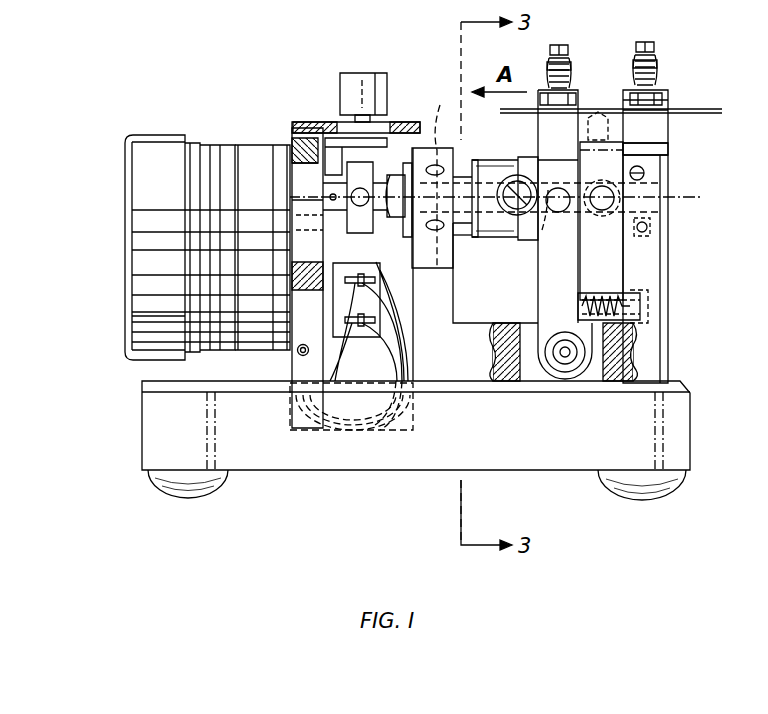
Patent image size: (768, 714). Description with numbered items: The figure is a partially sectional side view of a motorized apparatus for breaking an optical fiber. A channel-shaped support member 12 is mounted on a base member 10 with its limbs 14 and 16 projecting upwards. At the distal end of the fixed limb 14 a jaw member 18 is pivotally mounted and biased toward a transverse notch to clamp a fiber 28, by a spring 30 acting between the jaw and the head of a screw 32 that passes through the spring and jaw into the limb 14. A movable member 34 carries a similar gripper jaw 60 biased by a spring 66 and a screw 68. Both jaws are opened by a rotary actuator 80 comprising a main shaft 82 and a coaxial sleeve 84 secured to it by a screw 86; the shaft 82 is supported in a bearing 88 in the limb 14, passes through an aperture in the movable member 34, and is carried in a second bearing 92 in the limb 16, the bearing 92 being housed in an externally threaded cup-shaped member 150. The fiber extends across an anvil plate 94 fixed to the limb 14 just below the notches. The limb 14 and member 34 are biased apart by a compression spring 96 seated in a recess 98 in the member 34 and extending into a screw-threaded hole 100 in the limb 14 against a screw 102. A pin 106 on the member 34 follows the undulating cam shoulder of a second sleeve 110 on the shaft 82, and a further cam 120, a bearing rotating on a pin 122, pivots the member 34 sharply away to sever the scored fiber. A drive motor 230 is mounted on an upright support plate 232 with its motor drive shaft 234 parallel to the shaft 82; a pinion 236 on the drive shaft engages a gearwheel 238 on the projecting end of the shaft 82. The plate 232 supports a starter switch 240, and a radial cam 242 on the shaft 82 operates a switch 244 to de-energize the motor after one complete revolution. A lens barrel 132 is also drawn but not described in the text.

The base member 10 is at (572, 440).
The channel-shaped support member 12 is at (458, 365).
The limb 14 is at (655, 280).
The limb 16 is at (482, 312).
The jaw member 18 is at (665, 106).
The fiber 28 is at (705, 112).
The spring 30 is at (657, 66).
The screw 32 is at (648, 48).
The movable member 34 is at (540, 305).
The gripper jaw 60 is at (538, 95).
The spring 66 is at (572, 64).
The screw 68 is at (562, 52).
The rotary actuator 80 is at (493, 150).
The main shaft 82 is at (497, 237).
The sleeve 84 is at (665, 148).
The screw 86 is at (612, 198).
The bearing 88 is at (655, 245).
The bearing 92 is at (531, 175).
The anvil plate 94 is at (592, 130).
The compression spring 96 is at (630, 340).
The recess 98 is at (640, 378).
The screw-threaded hole 100 is at (663, 323).
The screw 102 is at (665, 306).
The pin 106 is at (545, 250).
The second sleeve 110 is at (535, 158).
The further cam 120 is at (505, 210).
The pin 122 is at (525, 215).
The lens barrel 132 is at (180, 315).
The cup-shaped member 150 is at (648, 176).
The drive motor 230 is at (142, 243).
The upright support plate 232 is at (310, 428).
The motor drive shaft 234 is at (208, 232).
The pinion 236 is at (208, 210).
The gearwheel 238 is at (298, 146).
The starter switch 240 is at (340, 92).
The radial cam 242 is at (205, 250).
The switch 244 is at (352, 300).